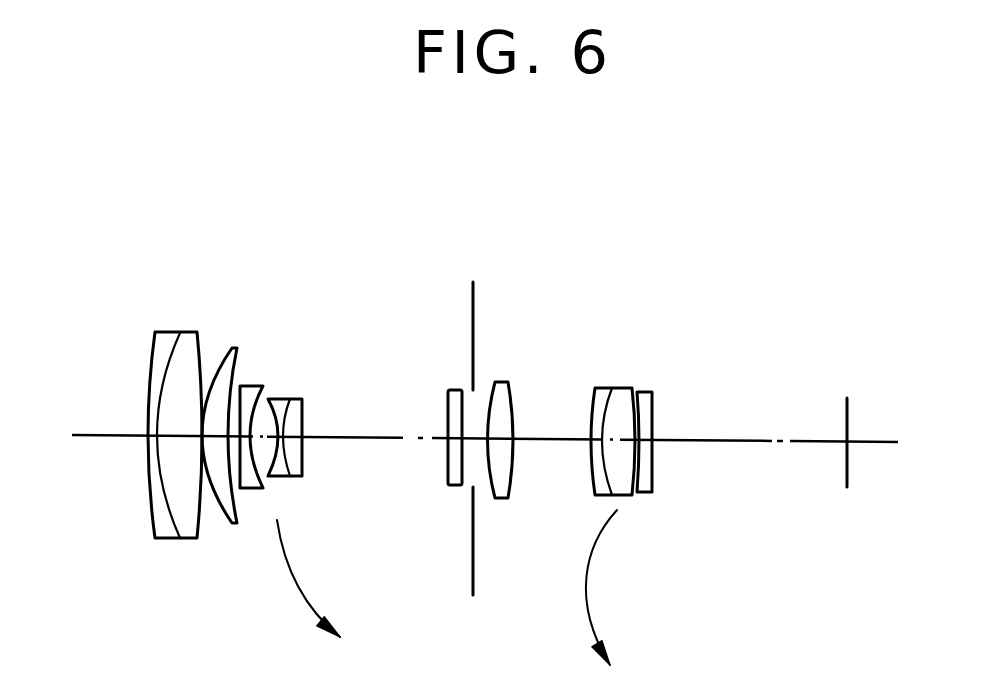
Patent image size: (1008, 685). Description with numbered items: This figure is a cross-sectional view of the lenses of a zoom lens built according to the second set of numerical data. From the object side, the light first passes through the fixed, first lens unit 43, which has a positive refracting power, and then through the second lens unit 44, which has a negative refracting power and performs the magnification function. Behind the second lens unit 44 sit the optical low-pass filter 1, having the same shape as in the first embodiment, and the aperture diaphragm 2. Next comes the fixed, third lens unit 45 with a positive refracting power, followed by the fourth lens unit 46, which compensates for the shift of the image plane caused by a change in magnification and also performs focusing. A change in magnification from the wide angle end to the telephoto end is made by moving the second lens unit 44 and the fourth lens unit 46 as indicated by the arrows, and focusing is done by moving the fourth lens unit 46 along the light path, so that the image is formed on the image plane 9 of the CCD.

The first lens unit 43 is at (205, 243).
The second lens unit 44 is at (245, 243).
The optical low-pass filter 1 is at (455, 390).
The aperture diaphragm 2 is at (472, 303).
The third lens unit 45 is at (500, 382).
The fourth lens unit 46 is at (668, 248).
The image plane 9 is at (848, 400).